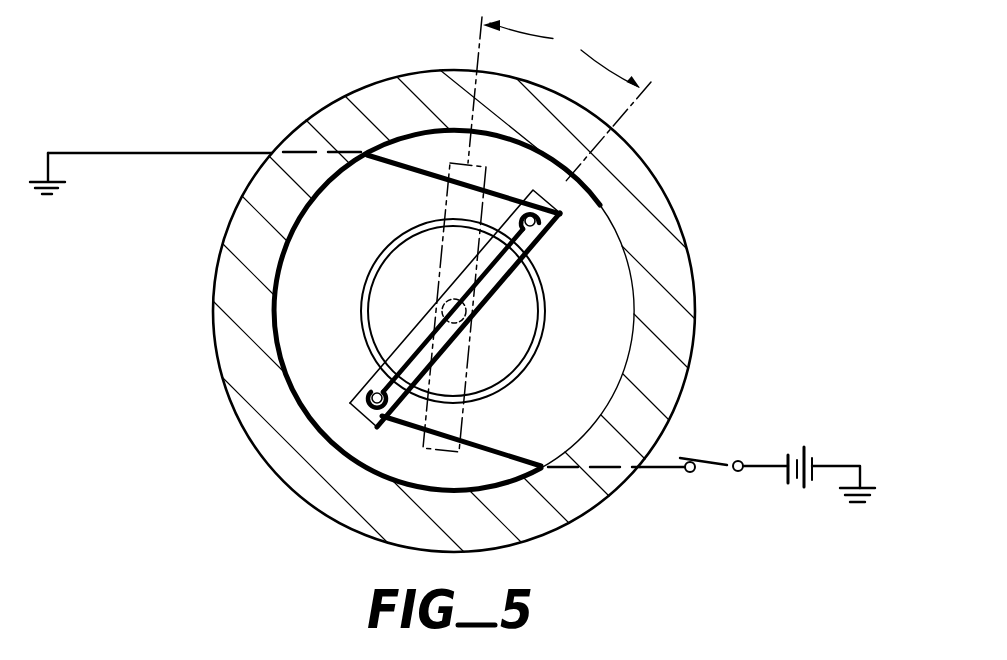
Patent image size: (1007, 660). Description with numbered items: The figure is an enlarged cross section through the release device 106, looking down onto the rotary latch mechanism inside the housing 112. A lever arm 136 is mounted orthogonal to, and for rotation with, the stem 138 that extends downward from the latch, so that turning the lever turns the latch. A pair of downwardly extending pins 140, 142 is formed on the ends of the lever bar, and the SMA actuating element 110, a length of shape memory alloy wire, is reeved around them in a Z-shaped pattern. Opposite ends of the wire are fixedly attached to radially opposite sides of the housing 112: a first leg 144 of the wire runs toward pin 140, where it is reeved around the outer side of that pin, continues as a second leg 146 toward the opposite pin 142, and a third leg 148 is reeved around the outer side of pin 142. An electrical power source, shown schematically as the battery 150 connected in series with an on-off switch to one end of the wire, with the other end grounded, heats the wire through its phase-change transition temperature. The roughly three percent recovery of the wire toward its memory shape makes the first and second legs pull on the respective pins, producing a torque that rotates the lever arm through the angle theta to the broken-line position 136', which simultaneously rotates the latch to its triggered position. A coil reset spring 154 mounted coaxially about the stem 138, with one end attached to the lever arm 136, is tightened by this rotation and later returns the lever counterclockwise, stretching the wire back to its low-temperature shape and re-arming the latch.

The release device 106 is at (359, 71).
The SMA actuating element 110 is at (486, 446).
The housing 112 is at (240, 300).
The lever arm 136 is at (560, 308).
The lever arm in triggered position 136' is at (499, 234).
The stem 138 is at (443, 294).
The pin 140 is at (372, 399).
The pin 142 is at (543, 212).
The first leg 144 is at (388, 461).
The second leg 146 is at (377, 337).
The third leg 148 is at (400, 152).
The battery 150 is at (792, 452).
The coil reset spring 154 is at (547, 335).